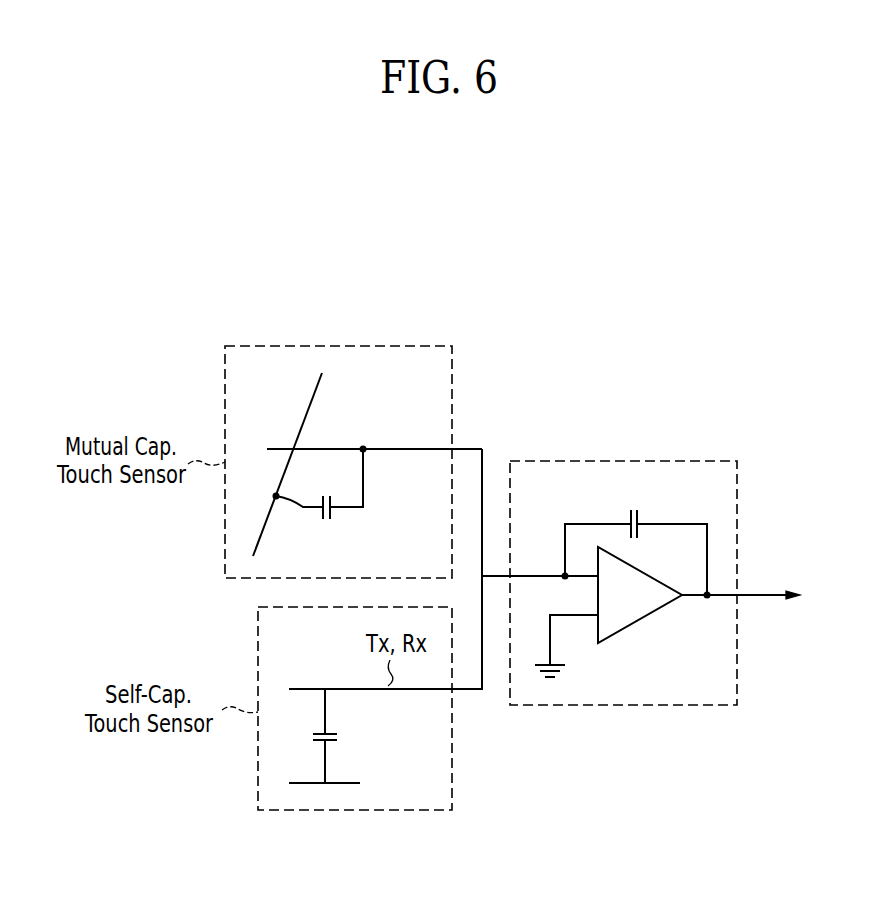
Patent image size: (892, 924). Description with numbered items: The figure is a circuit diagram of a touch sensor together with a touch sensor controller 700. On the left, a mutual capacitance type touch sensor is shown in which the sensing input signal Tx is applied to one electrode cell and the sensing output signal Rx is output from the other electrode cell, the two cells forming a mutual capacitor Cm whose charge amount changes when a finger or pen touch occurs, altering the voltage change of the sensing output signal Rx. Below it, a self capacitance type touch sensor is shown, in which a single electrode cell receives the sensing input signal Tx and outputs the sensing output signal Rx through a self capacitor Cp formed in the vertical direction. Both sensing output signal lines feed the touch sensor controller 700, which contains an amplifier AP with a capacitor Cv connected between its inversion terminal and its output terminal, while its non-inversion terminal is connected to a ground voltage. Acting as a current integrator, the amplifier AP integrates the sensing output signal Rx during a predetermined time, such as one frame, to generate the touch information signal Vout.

The sensing input signal Tx is at (312, 398).
The sensing output signal Rx is at (405, 446).
The mutual capacitor Cm is at (320, 499).
The self capacitance Cp is at (329, 736).
The touch sensor controller 700 is at (622, 705).
The amplifier AP is at (653, 613).
The capacitor Cv is at (636, 540).
The touch information signal Vout is at (749, 577).